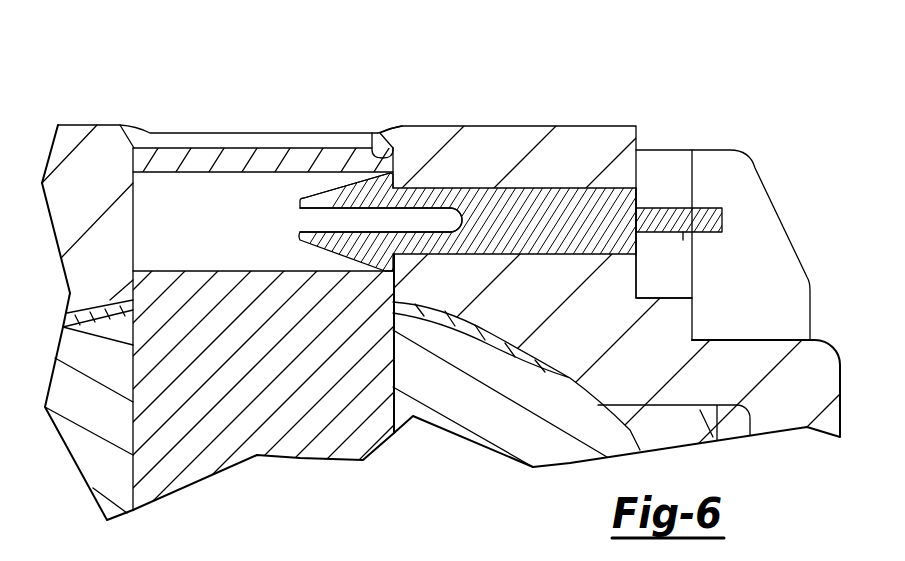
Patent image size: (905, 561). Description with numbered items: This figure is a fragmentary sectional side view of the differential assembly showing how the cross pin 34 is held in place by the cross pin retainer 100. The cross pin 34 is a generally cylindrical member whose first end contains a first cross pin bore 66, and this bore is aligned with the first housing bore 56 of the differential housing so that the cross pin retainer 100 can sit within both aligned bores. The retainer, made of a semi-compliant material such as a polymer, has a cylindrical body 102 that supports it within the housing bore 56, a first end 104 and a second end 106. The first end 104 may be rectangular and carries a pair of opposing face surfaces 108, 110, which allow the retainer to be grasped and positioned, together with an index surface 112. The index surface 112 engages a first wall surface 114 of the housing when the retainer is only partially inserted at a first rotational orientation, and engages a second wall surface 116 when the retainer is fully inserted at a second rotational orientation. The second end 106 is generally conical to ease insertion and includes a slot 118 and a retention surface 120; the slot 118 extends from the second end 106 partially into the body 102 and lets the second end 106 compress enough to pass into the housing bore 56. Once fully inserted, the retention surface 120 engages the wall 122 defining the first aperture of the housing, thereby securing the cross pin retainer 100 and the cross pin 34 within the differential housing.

The cross pin retainer 100 is at (536, 68).
The cross pin 34 is at (163, 147).
The first cross pin bore 66 is at (210, 173).
The body 102 is at (568, 185).
The first end 104 is at (724, 187).
The second end 106 is at (313, 195).
The face surface 108 is at (670, 208).
The face surface 110 is at (683, 234).
The index surface 112 is at (638, 213).
The first wall surface 114 is at (693, 317).
The second wall surface 116 is at (637, 284).
The slot 118 is at (388, 209).
The retention surface 120 is at (397, 173).
The wall 122 is at (372, 133).
The first housing bore 56 is at (508, 190).